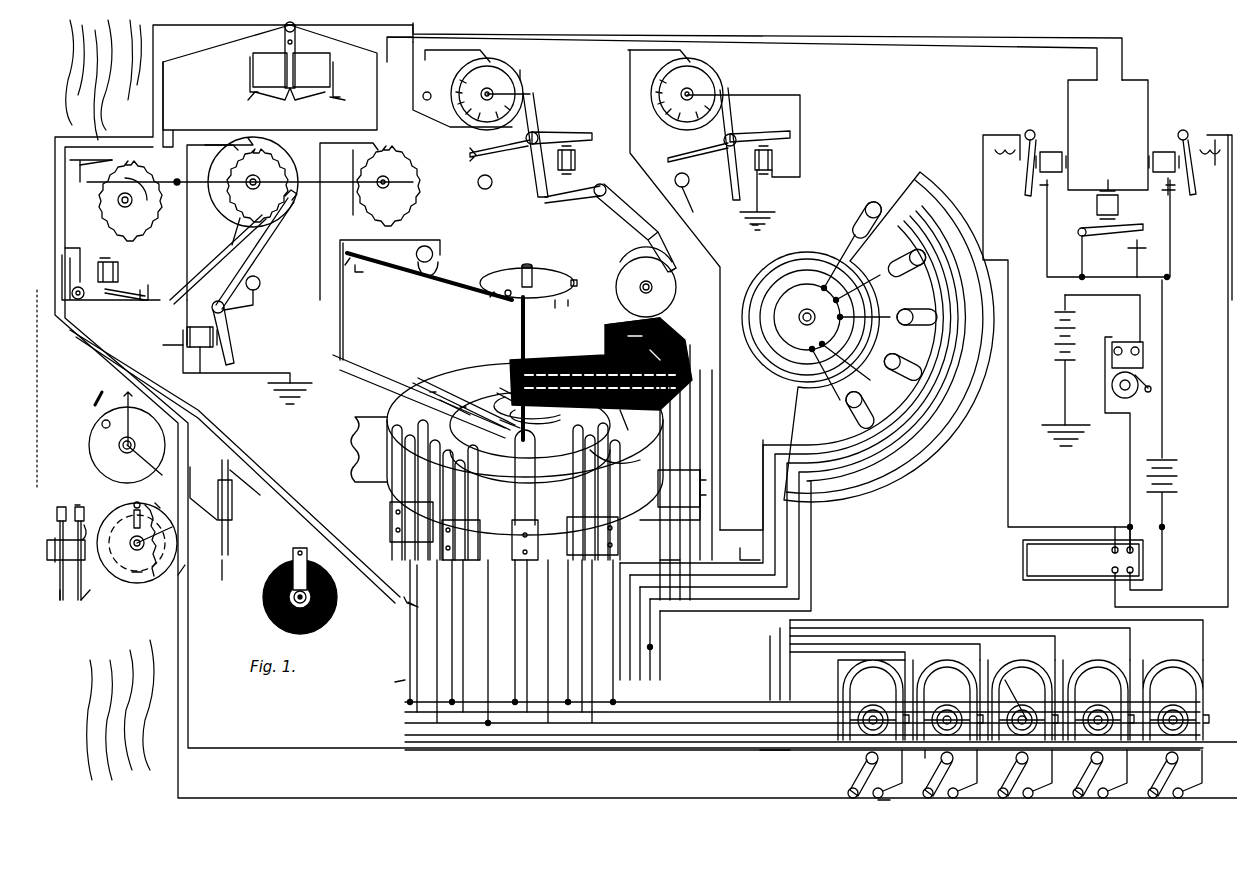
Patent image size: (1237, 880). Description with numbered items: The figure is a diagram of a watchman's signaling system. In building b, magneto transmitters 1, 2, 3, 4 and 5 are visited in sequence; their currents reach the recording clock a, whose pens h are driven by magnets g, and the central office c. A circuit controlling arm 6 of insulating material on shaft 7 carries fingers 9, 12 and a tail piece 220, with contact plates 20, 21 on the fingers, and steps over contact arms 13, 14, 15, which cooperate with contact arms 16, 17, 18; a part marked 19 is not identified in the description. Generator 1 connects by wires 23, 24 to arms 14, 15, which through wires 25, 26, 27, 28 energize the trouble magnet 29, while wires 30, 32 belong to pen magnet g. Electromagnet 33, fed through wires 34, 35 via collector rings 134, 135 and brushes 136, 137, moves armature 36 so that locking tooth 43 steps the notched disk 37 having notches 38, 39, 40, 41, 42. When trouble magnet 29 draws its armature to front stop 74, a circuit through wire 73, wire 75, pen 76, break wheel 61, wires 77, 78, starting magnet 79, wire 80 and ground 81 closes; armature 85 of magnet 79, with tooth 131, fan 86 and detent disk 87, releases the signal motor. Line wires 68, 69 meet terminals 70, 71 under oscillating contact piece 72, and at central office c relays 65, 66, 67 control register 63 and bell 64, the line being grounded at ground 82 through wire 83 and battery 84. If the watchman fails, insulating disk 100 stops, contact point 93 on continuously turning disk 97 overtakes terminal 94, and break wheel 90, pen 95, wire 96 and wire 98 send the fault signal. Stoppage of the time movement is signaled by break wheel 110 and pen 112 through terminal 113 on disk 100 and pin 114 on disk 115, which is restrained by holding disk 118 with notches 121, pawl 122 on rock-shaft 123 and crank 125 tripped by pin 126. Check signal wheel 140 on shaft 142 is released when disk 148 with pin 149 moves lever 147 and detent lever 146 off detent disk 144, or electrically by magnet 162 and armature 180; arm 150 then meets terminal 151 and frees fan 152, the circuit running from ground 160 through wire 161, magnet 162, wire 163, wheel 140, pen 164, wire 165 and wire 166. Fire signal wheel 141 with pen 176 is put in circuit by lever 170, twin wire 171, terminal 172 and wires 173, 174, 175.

The magneto generator 1 is at (1178, 720).
The magneto generator 2 is at (1103, 720).
The magneto generator 3 is at (627, 428).
The magneto generator 4 is at (952, 720).
The magneto generator 5 is at (878, 720).
The circuit controlling arm 6 is at (580, 360).
The shaft 7 is at (520, 322).
The finger 9 is at (575, 420).
The finger 12 is at (684, 360).
The contact arm 13 is at (672, 418).
The contact arm 14 is at (672, 448).
The contact arm 15 is at (700, 380).
The contact arm 16 is at (672, 432).
The contact arm 17 is at (695, 405).
The contact arm 18 is at (712, 395).
The contact 19 is at (657, 356).
The contact plate 20 is at (637, 342).
The contact plate 21 is at (660, 345).
The tail piece 220 is at (625, 330).
The wire 23 is at (410, 717).
The wire 24 is at (405, 712).
The wire 25 is at (668, 553).
The wire 26 is at (679, 499).
The wire 27 is at (368, 572).
The wire 28 is at (372, 540).
The trouble magnet 29 is at (108, 262).
The wire 30 is at (730, 538).
The wire 32 is at (748, 550).
The electromagnet 33 is at (440, 265).
The wire 34 is at (360, 385).
The wire 35 is at (340, 348).
The armature 36 is at (368, 262).
The disk 37 is at (545, 270).
The notch 38 is at (490, 298).
The notch 39 is at (509, 290).
The notch 40 is at (536, 278).
The notch 41 is at (560, 303).
The notch 42 is at (574, 282).
The locking tooth 43 is at (505, 298).
The break wheel 61 is at (130, 180).
The register 63 is at (1125, 371).
The bell 64 is at (1132, 393).
The relay 65 is at (1150, 157).
The relay 66 is at (92, 296).
The relay 67 is at (1095, 208).
The line wire 68 is at (1072, 110).
The line wire 69 is at (285, 38).
The terminal 70 is at (253, 70).
The terminal 71 is at (339, 81).
The contact piece 72 is at (296, 86).
The wire 73 is at (165, 98).
The front stop 74 is at (150, 283).
The wire 75 is at (100, 178).
The contact pen 76 is at (96, 165).
The wire 77 is at (320, 165).
The wire 78 is at (187, 232).
The electromagnet 79 is at (198, 336).
The wire 80 is at (205, 372).
The ground 81 is at (283, 398).
The ground 82 is at (1058, 448).
The wire 83 is at (1108, 295).
The battery 84 is at (1058, 340).
The armature 85 is at (232, 335).
The fan 86 is at (260, 297).
The detent disk 87 is at (240, 222).
The break wheel 90 is at (268, 175).
The contact point 93 is at (95, 405).
The terminal 94 is at (218, 468).
The pen 95 is at (212, 222).
The wire 96 is at (187, 262).
The circuit controlling disk 97 is at (95, 455).
The wire 98 is at (128, 392).
The insulating disk 100 is at (237, 570).
The break wheel 110 is at (392, 170).
The pen 112 is at (349, 221).
The second terminal 113 is at (230, 470).
The pin 114 is at (158, 505).
The disk 115 is at (88, 585).
The holding disk 118 is at (132, 572).
The notch 121 is at (160, 545).
The holding pawl 122 is at (60, 507).
The rock-shaft 123 is at (75, 505).
The crank 125 is at (92, 520).
The trip pin 126 is at (102, 427).
The tooth 131 is at (287, 205).
The collector ring 134 is at (512, 425).
The collector ring 135 is at (505, 392).
The brush 136 is at (460, 412).
The brush 137 is at (440, 385).
The break wheel 140 is at (510, 80).
The break wheel 141 is at (705, 85).
The shaft 142 is at (472, 96).
The detent disk 144 is at (525, 78).
The detent lever 146 is at (538, 108).
The lever 147 is at (618, 222).
The disk 148 is at (632, 262).
The pin 149 is at (678, 287).
The circuit controlling arm 150 is at (492, 148).
The circuit terminal 151 is at (470, 150).
The fan 152 is at (690, 185).
The ground 160 is at (755, 225).
The wire 161 is at (760, 200).
The electromagnet 162 is at (575, 160).
The wire 163 is at (590, 97).
The pen 164 is at (457, 61).
The wire 165 is at (462, 84).
The wire 166 is at (410, 88).
The switch lever 170 is at (862, 780).
The twin wire 171 is at (778, 798).
The terminal 172 is at (885, 795).
The wire 173 is at (893, 785).
The wire 174 is at (395, 682).
The wire 175 is at (720, 430).
The pen 176 is at (659, 60).
The armature 180 is at (590, 130).
The recording clock a is at (775, 365).
The building b is at (887, 337).
The central office c is at (1129, 435).
The magnet g is at (870, 418).
The recording pen h is at (828, 375).